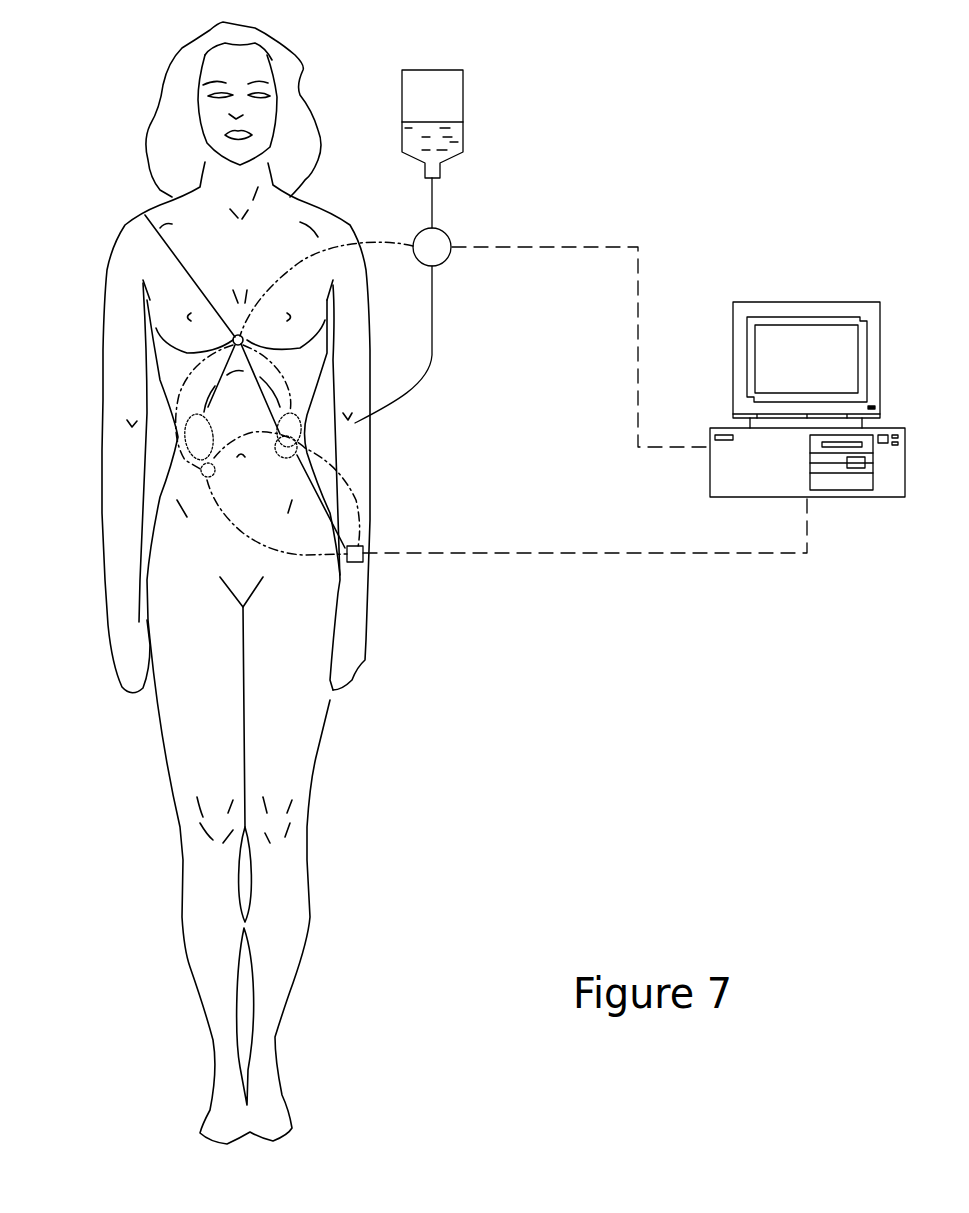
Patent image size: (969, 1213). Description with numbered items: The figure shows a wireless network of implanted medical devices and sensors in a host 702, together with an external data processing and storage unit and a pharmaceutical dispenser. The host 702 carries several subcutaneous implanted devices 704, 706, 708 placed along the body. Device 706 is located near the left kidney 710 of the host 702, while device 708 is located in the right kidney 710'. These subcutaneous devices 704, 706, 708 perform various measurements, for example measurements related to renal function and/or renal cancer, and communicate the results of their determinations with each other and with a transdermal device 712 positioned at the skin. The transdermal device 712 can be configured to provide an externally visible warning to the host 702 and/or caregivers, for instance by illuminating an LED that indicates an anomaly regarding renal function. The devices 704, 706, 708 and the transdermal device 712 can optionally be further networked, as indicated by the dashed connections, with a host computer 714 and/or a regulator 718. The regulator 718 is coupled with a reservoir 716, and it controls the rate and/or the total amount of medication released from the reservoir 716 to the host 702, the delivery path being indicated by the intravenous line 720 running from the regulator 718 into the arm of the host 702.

The host 702 is at (366, 650).
The subcutaneous implanted device 704 is at (145, 215).
The subcutaneous implanted device 706 is at (205, 472).
The subcutaneous implanted device 708 is at (295, 450).
The left kidney 710 is at (134, 410).
The right kidney 710' is at (353, 395).
The transdermal device 712 is at (360, 563).
The host computer 714 is at (808, 300).
The reservoir 716 is at (463, 110).
The regulator 718 is at (448, 263).
The intravenous line 720 is at (355, 423).